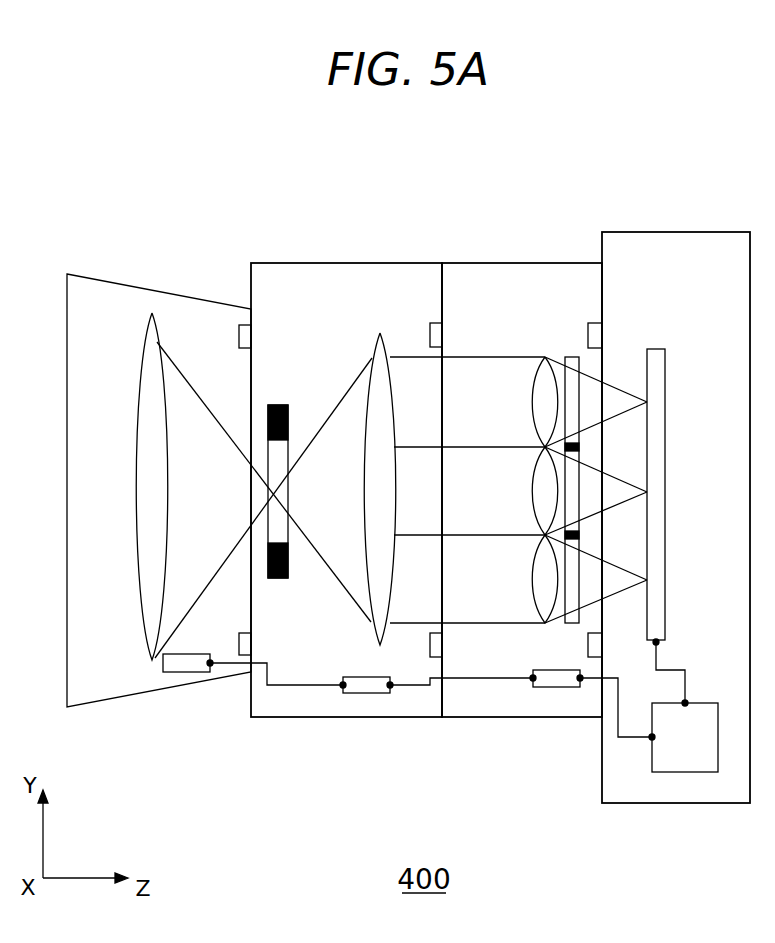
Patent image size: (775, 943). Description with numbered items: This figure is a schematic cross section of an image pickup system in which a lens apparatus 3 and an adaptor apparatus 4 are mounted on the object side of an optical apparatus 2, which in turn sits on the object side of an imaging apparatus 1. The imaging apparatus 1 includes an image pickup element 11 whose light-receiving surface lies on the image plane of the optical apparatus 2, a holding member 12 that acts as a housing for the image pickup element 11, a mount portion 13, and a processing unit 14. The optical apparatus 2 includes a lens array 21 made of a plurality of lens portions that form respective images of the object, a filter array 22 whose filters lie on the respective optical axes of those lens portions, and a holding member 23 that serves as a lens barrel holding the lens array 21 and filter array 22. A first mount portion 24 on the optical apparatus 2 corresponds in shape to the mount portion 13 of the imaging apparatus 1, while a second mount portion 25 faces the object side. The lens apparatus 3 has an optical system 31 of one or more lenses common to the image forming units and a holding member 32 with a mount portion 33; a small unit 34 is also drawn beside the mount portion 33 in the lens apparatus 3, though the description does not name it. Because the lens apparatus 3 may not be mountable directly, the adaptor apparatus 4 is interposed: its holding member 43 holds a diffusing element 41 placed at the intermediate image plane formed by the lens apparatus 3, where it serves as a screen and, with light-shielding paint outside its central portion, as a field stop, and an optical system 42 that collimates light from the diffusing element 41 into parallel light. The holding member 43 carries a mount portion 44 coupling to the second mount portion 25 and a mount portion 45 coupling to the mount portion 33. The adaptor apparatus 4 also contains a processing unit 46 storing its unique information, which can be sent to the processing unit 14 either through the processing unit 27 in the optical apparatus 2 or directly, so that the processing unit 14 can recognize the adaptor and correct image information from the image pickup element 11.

The imaging apparatus 1 is at (750, 149).
The image pickup element 11 is at (652, 348).
The holding member 12 is at (722, 231).
The mount portion 13 is at (588, 648).
The processing unit 14 is at (672, 773).
The optical apparatus 2 is at (432, 168).
The lens array 21 is at (545, 356).
The filter array 22 is at (573, 356).
The holding member 23 is at (471, 262).
The first mount portion 24 is at (535, 494).
The second mount portion 25 is at (427, 646).
The processing unit 27 is at (557, 688).
The lens apparatus 3 is at (68, 212).
The optical system 31 is at (153, 314).
The holding member 32 is at (119, 284).
The mount portion 33 is at (195, 530).
The drive circuit 34 is at (186, 653).
The adaptor apparatus 4 is at (242, 190).
The diffusing element 41 is at (282, 404).
The optical system 42 is at (380, 332).
The holding member 43 is at (279, 262).
The mount portion 44 is at (385, 546).
The mount portion 45 is at (239, 647).
The processing unit 46 is at (366, 676).